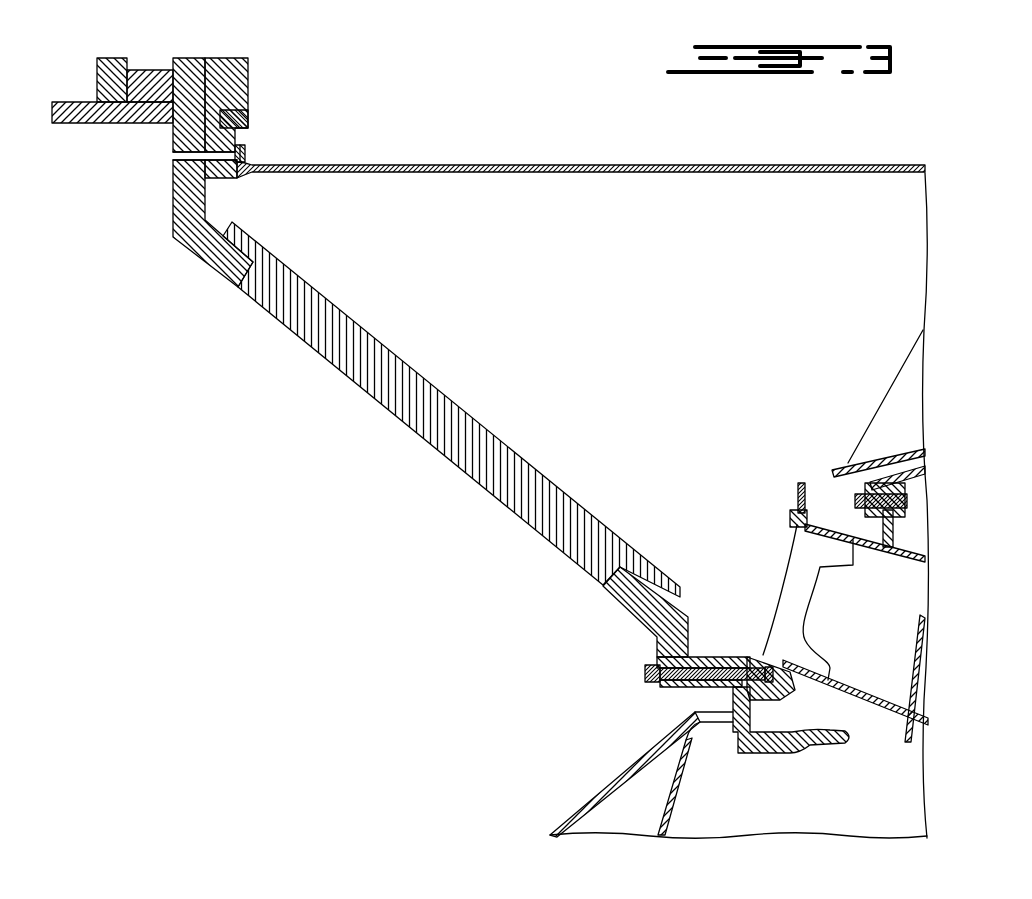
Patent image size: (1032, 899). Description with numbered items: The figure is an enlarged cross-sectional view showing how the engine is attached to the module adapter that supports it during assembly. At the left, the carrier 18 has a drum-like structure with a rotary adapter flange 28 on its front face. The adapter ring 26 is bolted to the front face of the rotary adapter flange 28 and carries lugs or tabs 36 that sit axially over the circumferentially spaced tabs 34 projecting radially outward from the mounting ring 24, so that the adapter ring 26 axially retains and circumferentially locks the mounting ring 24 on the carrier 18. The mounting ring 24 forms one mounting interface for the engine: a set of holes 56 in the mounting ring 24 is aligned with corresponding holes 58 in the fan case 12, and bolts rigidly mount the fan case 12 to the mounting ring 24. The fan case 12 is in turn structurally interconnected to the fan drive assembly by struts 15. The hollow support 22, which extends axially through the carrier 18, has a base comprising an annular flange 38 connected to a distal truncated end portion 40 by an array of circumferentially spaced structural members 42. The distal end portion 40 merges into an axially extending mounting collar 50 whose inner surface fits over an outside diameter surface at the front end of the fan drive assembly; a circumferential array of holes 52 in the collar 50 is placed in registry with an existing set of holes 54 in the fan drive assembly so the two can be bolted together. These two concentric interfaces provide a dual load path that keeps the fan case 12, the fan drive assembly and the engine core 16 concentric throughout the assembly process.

The fan case 12 is at (553, 163).
The struts 15 is at (912, 412).
The engine core 16 is at (880, 792).
The carrier 18 is at (115, 135).
The support 22 is at (540, 397).
The mounting ring 24 is at (235, 182).
The adapter ring 26 is at (222, 90).
The rotary adapter flange 28 is at (183, 70).
The tabs 34 is at (212, 110).
The tabs 36 is at (237, 122).
The annular flange 38 is at (183, 170).
The distal truncated end portion 40 is at (764, 631).
The structural members 42 is at (585, 520).
The mounting collar 50 is at (707, 685).
The holes 52 is at (660, 687).
The holes 54 is at (778, 683).
The holes 56 is at (212, 180).
The holes 58 is at (242, 150).